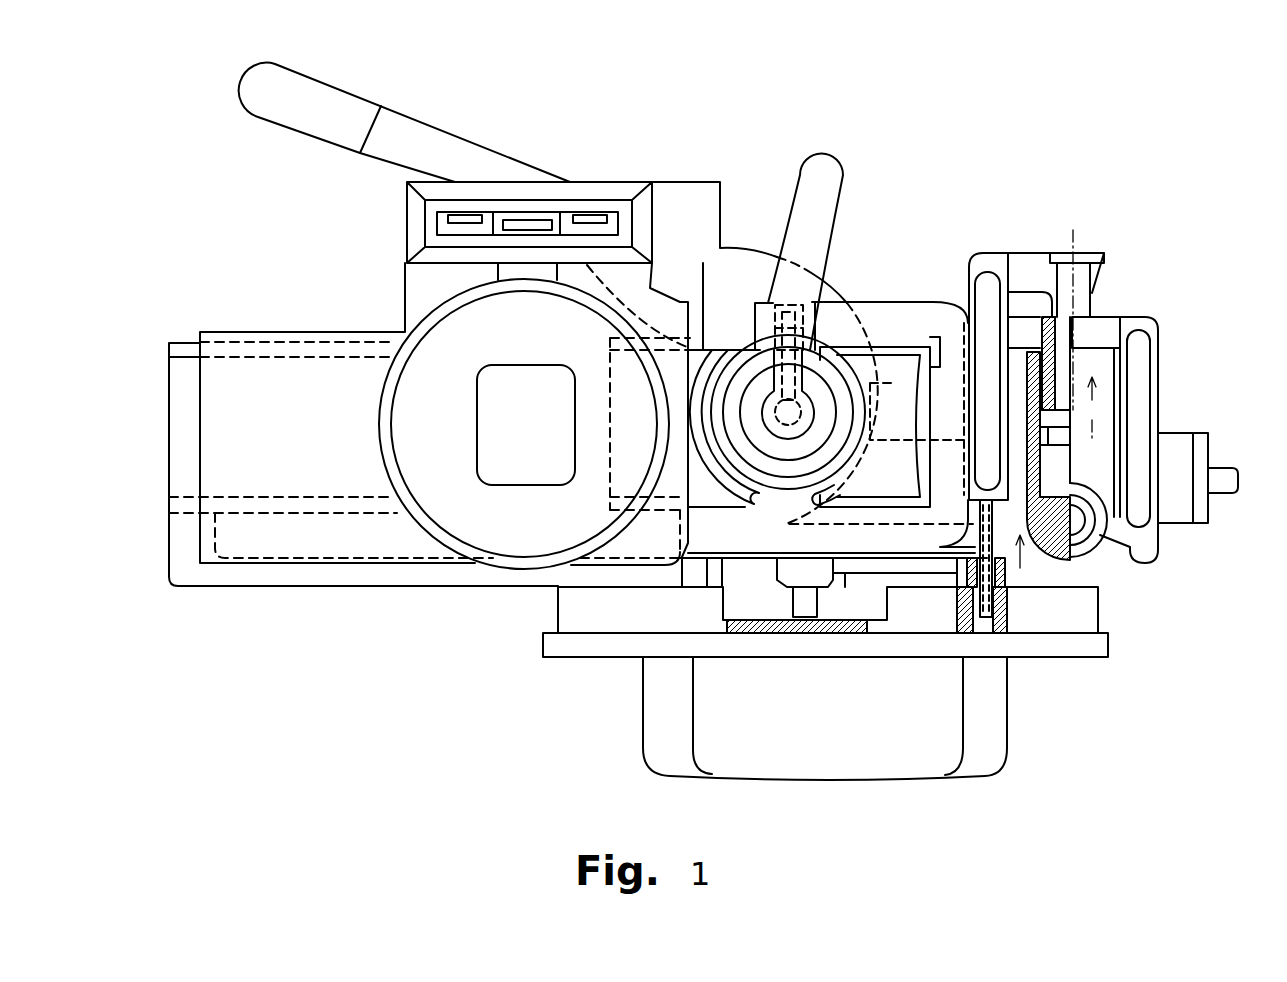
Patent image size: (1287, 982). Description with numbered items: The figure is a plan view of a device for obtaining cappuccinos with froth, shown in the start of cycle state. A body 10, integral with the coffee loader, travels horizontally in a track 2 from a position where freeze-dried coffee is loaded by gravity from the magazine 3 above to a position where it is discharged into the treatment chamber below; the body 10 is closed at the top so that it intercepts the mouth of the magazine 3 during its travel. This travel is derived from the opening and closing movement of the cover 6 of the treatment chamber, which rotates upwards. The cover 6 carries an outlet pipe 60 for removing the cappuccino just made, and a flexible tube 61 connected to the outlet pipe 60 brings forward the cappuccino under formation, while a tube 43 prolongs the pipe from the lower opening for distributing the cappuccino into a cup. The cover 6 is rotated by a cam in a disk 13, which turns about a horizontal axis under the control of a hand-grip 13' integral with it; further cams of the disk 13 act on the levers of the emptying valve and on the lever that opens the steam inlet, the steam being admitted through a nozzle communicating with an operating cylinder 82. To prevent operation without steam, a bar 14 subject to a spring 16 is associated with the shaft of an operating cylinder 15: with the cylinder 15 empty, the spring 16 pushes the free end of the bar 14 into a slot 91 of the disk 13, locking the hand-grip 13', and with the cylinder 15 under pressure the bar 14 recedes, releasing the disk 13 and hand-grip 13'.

The track 2 is at (245, 345).
The magazine 3 is at (493, 574).
The cover 6 is at (820, 390).
The body 10 is at (180, 338).
The disk 13 is at (857, 607).
The hand-grip 13' is at (825, 744).
The bar 14 is at (1005, 571).
The operating cylinder 15 is at (1038, 412).
The spring 16 is at (1050, 383).
The tube 43 is at (427, 130).
The outlet pipe 60 is at (762, 364).
The flexible tube 61 is at (822, 205).
The operating cylinder 82 is at (1182, 446).
The slot 91 is at (1010, 623).